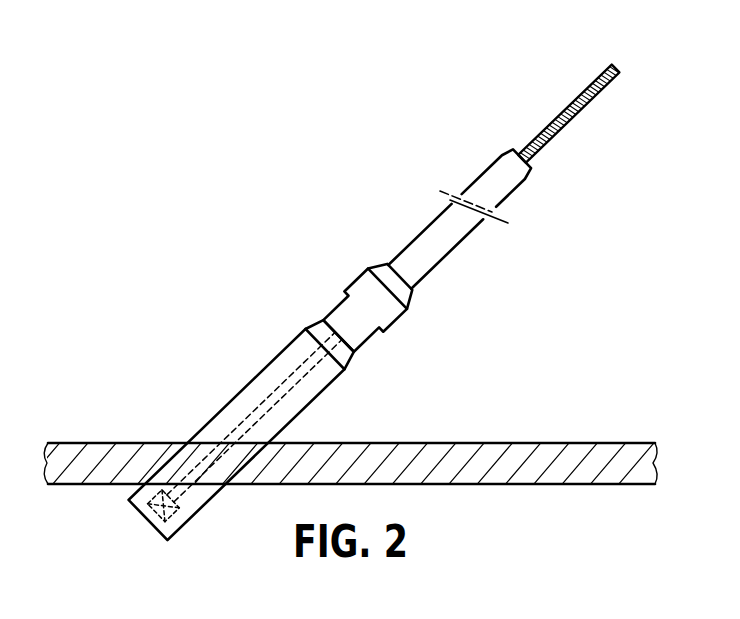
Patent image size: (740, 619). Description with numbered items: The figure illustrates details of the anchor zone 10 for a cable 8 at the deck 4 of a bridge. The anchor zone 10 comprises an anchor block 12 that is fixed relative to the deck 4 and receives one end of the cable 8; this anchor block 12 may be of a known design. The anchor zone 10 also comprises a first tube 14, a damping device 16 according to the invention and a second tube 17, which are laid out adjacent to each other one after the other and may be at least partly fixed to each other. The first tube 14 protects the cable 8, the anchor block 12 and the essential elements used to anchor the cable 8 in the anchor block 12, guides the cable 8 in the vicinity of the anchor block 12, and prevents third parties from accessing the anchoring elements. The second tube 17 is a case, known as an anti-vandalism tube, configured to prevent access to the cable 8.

The deck 4 is at (582, 443).
The cable 8 is at (548, 87).
The anchor zone 10 is at (232, 149).
The anchor block 12 is at (156, 519).
The first tube 14 is at (278, 355).
The damping device 16 is at (335, 308).
The second tube 17 is at (425, 230).